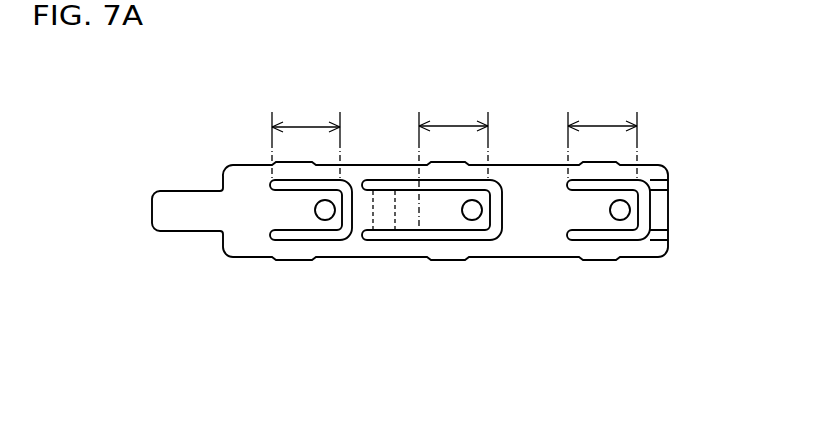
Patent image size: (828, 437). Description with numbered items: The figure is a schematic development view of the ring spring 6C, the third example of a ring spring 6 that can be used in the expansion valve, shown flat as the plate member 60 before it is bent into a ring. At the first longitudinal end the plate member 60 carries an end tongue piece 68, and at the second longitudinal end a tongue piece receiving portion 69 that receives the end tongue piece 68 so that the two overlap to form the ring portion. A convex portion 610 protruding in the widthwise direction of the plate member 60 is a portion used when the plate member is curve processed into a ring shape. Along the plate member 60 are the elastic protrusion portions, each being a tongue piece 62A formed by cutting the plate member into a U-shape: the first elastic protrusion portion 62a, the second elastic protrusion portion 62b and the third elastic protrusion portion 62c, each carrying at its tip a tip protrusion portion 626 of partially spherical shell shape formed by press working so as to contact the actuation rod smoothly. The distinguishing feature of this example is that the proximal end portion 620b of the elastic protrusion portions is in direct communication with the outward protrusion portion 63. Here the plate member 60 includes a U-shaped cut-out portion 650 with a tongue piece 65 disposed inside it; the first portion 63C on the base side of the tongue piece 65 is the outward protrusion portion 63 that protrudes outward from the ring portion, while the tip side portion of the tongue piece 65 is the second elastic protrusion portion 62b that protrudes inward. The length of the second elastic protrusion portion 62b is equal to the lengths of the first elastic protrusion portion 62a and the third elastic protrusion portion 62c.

The ring spring 6 is at (430, 194).
The ring spring of the third example 6C is at (201, 65).
The plate member 60 is at (527, 180).
The convex portion 610 is at (284, 258).
The tongue piece 62A is at (316, 261).
The first elastic protrusion portion 62a is at (292, 208).
The second elastic protrusion portion 62b is at (442, 222).
The third elastic protrusion portion 62c is at (593, 212).
The proximal end portion 620b is at (430, 217).
The outward protrusion portion 63 is at (380, 197).
The first portion of the tongue piece 63C is at (377, 229).
The tip protrusion portion 626 is at (625, 208).
The tongue piece 65 is at (453, 212).
The U-shaped cut-out portion 650 is at (495, 217).
The end tongue piece 68 is at (175, 217).
The tongue piece receiving portion 69 is at (658, 217).